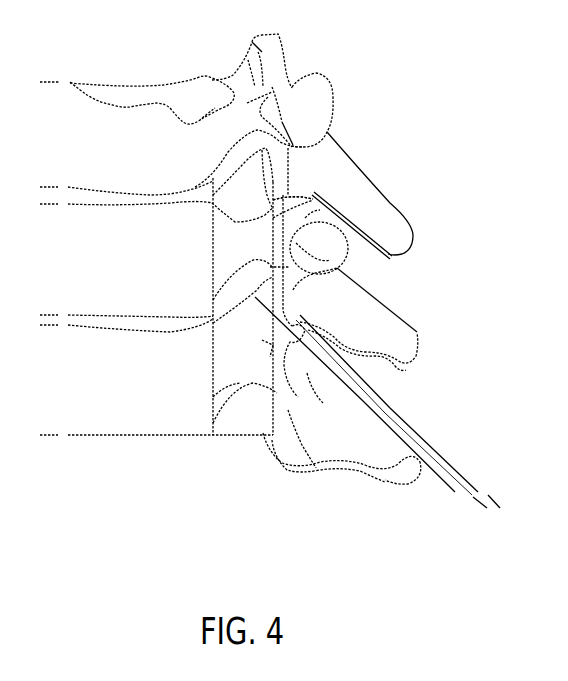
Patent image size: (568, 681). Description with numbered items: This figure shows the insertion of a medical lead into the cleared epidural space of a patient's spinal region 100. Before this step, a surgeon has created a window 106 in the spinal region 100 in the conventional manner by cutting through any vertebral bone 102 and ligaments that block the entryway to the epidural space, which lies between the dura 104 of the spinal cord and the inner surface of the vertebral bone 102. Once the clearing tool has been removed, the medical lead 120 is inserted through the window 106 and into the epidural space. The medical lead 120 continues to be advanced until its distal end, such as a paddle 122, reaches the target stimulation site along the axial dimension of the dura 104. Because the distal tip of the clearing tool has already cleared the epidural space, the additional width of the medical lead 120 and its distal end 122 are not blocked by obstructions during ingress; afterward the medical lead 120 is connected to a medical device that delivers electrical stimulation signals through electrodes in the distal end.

The spinal region 100 is at (388, 86).
The vertebral bone 102 is at (345, 283).
The dura 104 is at (233, 424).
The window 106 is at (316, 468).
The medical lead 120 is at (420, 432).
The paddle 122 is at (305, 218).